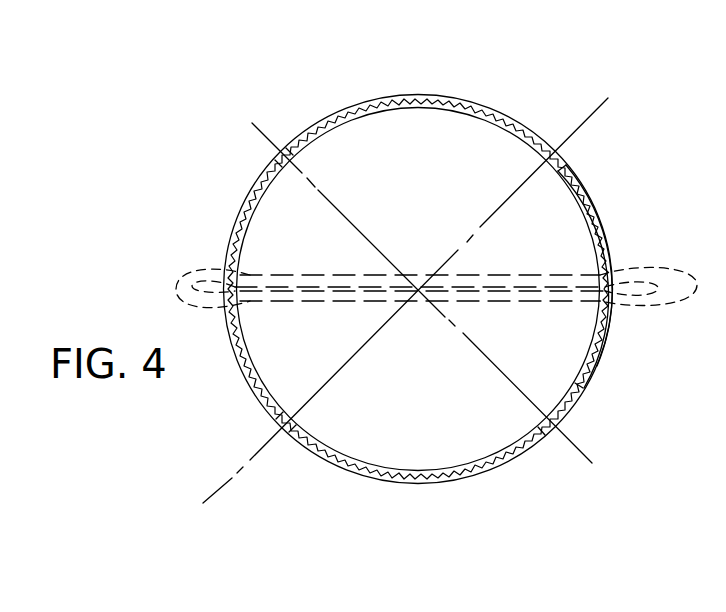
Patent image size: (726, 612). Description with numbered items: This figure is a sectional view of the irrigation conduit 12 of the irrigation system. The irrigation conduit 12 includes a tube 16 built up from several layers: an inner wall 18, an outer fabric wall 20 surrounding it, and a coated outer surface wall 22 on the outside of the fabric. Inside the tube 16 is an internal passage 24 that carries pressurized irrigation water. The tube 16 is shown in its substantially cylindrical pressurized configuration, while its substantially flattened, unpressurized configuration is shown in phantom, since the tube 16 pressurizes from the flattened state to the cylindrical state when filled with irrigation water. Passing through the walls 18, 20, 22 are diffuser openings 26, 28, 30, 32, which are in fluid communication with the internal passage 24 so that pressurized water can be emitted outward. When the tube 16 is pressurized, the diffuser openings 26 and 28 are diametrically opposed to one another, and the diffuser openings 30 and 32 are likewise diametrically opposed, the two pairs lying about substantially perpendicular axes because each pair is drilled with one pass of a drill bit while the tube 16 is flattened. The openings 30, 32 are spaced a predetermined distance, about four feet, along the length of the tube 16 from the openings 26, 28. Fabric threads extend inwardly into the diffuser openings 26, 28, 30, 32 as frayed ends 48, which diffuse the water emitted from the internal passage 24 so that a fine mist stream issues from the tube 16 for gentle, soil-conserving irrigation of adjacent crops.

The irrigation conduit 12 is at (515, 101).
The tube 16 is at (595, 196).
The inner wall 18 is at (462, 470).
The outer fabric wall 20 is at (584, 388).
The coated outer surface wall 22 is at (598, 366).
The internal passage 24 is at (342, 430).
The diffuser opening 26 is at (559, 172).
The diffuser opening 28 is at (278, 417).
The diffuser opening 30 is at (296, 151).
The diffuser opening 32 is at (546, 440).
The frayed ends 48 is at (289, 432).